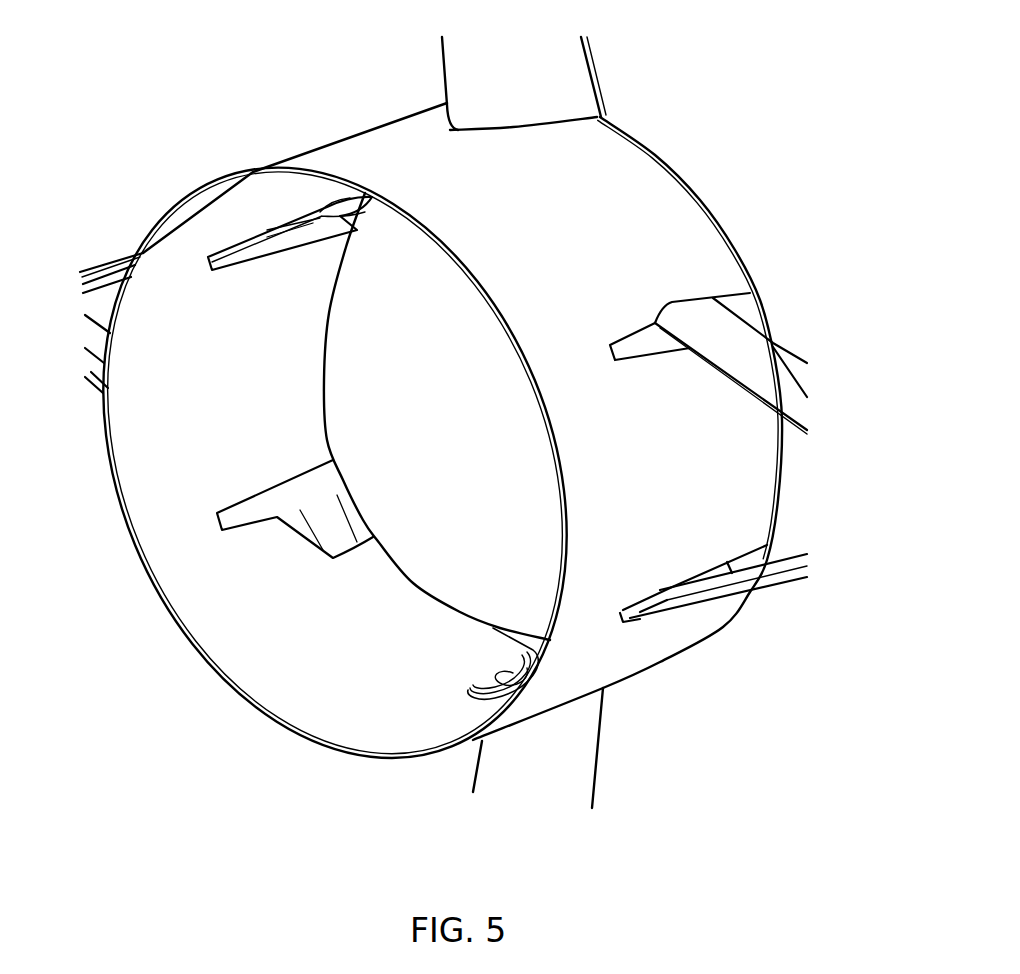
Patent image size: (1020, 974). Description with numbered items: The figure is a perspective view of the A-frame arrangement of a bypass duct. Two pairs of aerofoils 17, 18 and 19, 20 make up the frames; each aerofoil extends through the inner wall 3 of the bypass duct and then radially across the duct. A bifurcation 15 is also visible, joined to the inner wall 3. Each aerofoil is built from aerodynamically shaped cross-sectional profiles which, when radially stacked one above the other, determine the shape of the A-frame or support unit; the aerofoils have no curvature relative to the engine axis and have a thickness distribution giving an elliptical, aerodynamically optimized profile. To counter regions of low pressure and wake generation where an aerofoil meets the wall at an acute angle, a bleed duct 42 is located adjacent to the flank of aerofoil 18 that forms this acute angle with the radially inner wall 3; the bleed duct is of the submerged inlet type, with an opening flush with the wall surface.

The inner wall 3 is at (683, 208).
The bifurcation 15 is at (573, 82).
The aerofoil 17 is at (770, 353).
The aerofoil 18 is at (763, 577).
The aerofoil 19 is at (92, 375).
The aerofoil 20 is at (117, 270).
The bleed duct 42 is at (333, 243).